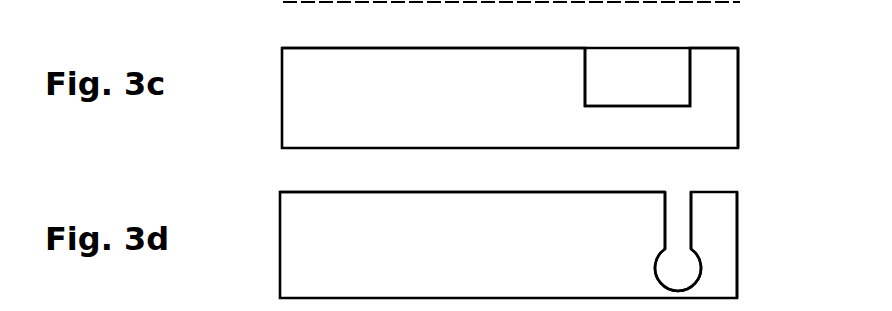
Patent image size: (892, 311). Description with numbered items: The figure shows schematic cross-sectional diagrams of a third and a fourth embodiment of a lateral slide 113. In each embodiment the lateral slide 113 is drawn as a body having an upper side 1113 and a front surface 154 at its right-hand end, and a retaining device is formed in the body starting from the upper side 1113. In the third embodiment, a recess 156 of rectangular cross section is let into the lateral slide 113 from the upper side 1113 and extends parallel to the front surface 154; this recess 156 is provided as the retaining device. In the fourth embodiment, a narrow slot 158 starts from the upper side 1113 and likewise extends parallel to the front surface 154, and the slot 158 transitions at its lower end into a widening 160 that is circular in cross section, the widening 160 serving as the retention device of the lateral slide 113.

In FIG. 3C, the lateral slide 113 is at (458, 115).
In FIG. 3D, the lateral slide 113 is at (458, 258).
In FIG. 3C, the upper side 1113 is at (310, 46).
In FIG. 3D, the upper side 1113 is at (308, 190).
In FIG. 3C, the front surface 154 is at (738, 97).
In FIG. 3D, the front surface 154 is at (737, 240).
In FIG. 3C, the recess 156 is at (640, 95).
In FIG. 3D, the slot 158 is at (675, 222).
In FIG. 3D, the widening 160 is at (677, 268).